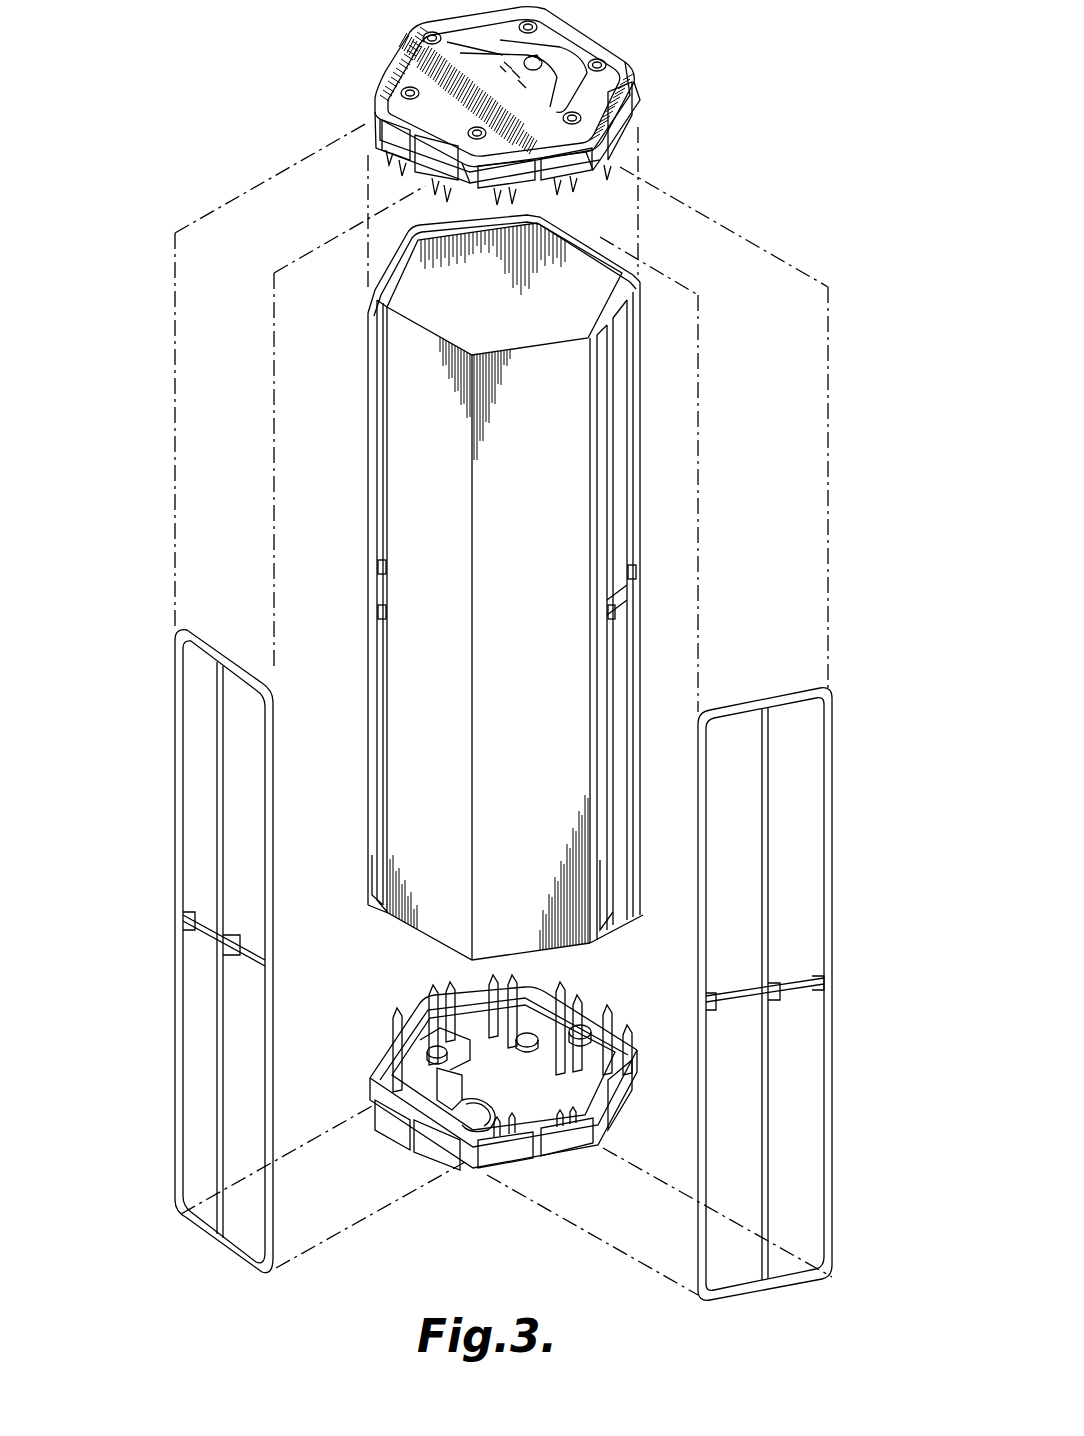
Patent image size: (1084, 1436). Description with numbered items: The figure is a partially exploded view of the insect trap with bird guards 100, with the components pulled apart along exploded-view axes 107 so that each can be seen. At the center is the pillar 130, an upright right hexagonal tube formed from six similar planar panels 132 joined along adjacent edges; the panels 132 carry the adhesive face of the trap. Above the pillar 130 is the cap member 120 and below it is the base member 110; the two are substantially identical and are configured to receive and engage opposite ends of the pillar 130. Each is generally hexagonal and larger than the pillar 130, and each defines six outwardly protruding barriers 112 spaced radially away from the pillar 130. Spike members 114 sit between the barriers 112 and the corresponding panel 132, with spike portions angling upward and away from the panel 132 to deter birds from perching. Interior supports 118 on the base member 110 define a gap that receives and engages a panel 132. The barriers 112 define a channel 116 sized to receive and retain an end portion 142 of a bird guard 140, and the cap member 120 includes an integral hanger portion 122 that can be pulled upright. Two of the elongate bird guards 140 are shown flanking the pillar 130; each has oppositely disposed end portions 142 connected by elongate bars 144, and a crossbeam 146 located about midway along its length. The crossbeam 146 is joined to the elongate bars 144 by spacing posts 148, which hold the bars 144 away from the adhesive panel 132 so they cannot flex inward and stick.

The insect trap with bird guards 100 is at (839, 82).
The exploded view axes 107 is at (206, 186).
The base member 110 is at (478, 1182).
The barriers 112 is at (391, 148).
The spike members 114 is at (378, 1060).
The channel 116 is at (374, 108).
The interior supports 118 is at (562, 1010).
The cap member 120 is at (391, 49).
The hanger portion 122 is at (572, 66).
The pillar 130 is at (427, 314).
The planar panels 132 is at (430, 661).
The bird guards 140 is at (502, 960).
The end portions 142 is at (226, 640).
The elongate bars 144 is at (270, 1012).
The crossbeam 146 is at (198, 958).
The spacing posts 148 is at (183, 932).